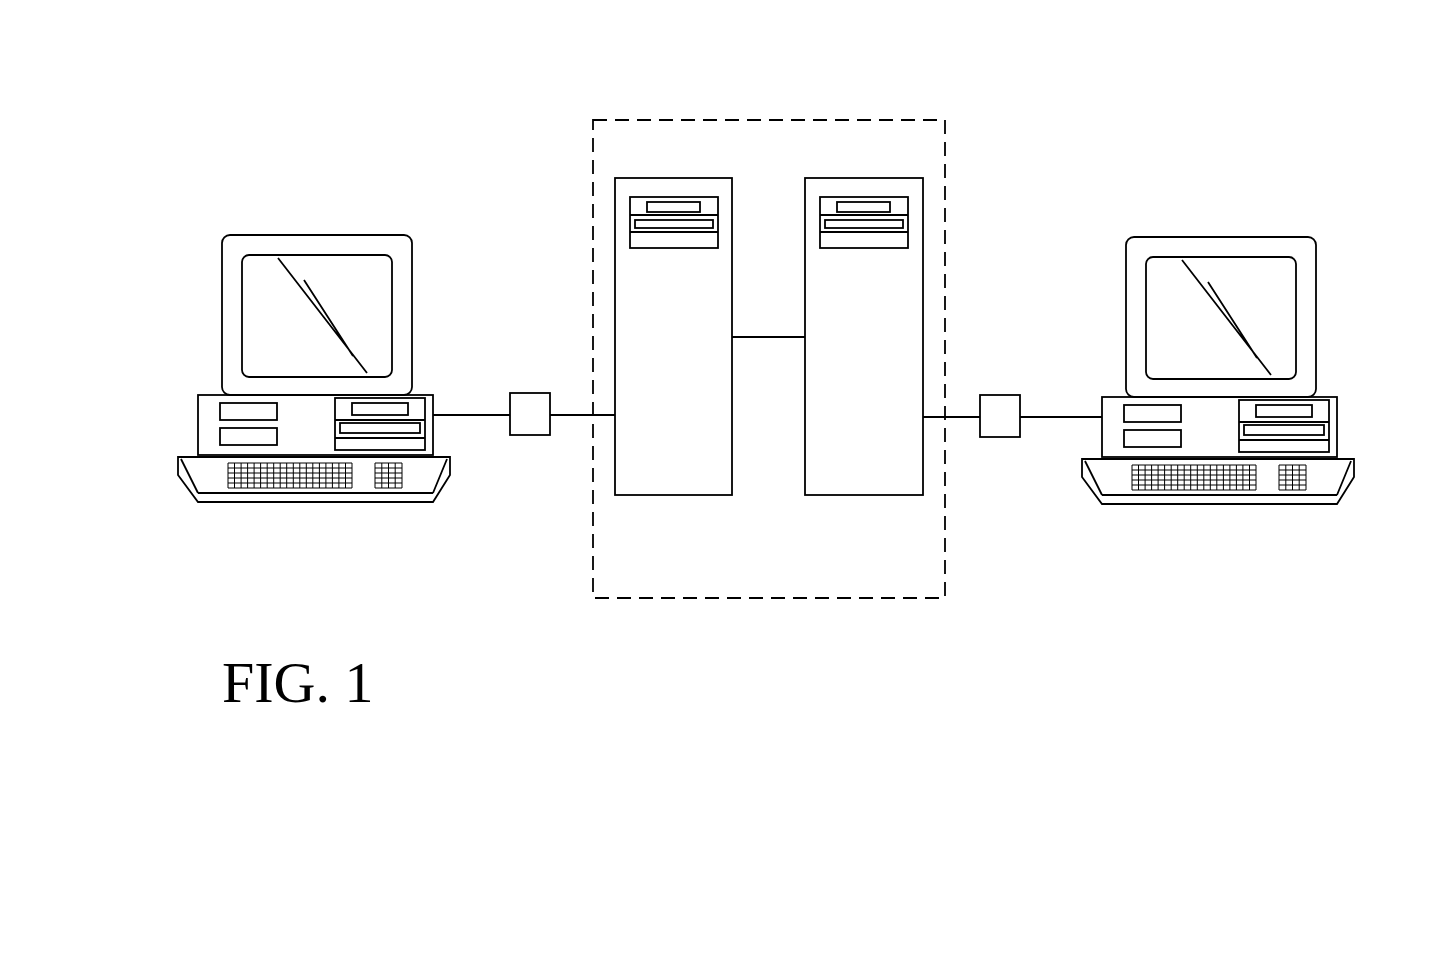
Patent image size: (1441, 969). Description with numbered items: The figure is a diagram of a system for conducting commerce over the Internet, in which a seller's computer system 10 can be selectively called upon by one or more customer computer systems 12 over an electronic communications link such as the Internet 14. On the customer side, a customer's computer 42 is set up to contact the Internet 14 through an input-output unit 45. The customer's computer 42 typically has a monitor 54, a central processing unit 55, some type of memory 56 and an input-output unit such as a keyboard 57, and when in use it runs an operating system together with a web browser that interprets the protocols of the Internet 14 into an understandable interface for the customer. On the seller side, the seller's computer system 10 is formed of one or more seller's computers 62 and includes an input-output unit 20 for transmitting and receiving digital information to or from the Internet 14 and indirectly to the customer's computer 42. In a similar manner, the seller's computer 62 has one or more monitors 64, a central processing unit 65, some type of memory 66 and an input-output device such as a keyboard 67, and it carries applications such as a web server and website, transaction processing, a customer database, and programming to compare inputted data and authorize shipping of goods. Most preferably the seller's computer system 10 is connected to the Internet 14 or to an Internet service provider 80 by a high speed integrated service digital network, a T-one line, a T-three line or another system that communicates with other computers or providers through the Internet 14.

The seller's computer system 10 is at (1130, 210).
The customer computer system 12 is at (380, 200).
The Internet 14 is at (769, 355).
The input-output unit 20 is at (1002, 413).
The customer's computer 42 is at (260, 235).
The input-output unit 45 is at (528, 405).
The monitor 54 is at (359, 250).
The central processing unit 55 is at (228, 410).
The memory 56 is at (227, 438).
The keyboard 57 is at (208, 475).
The seller's computer 62 is at (1248, 237).
The monitor 64 is at (1277, 259).
The central processing unit 65 is at (1135, 412).
The memory 66 is at (1130, 440).
The keyboard 67 is at (1332, 477).
The Internet service provider 80 is at (875, 495).